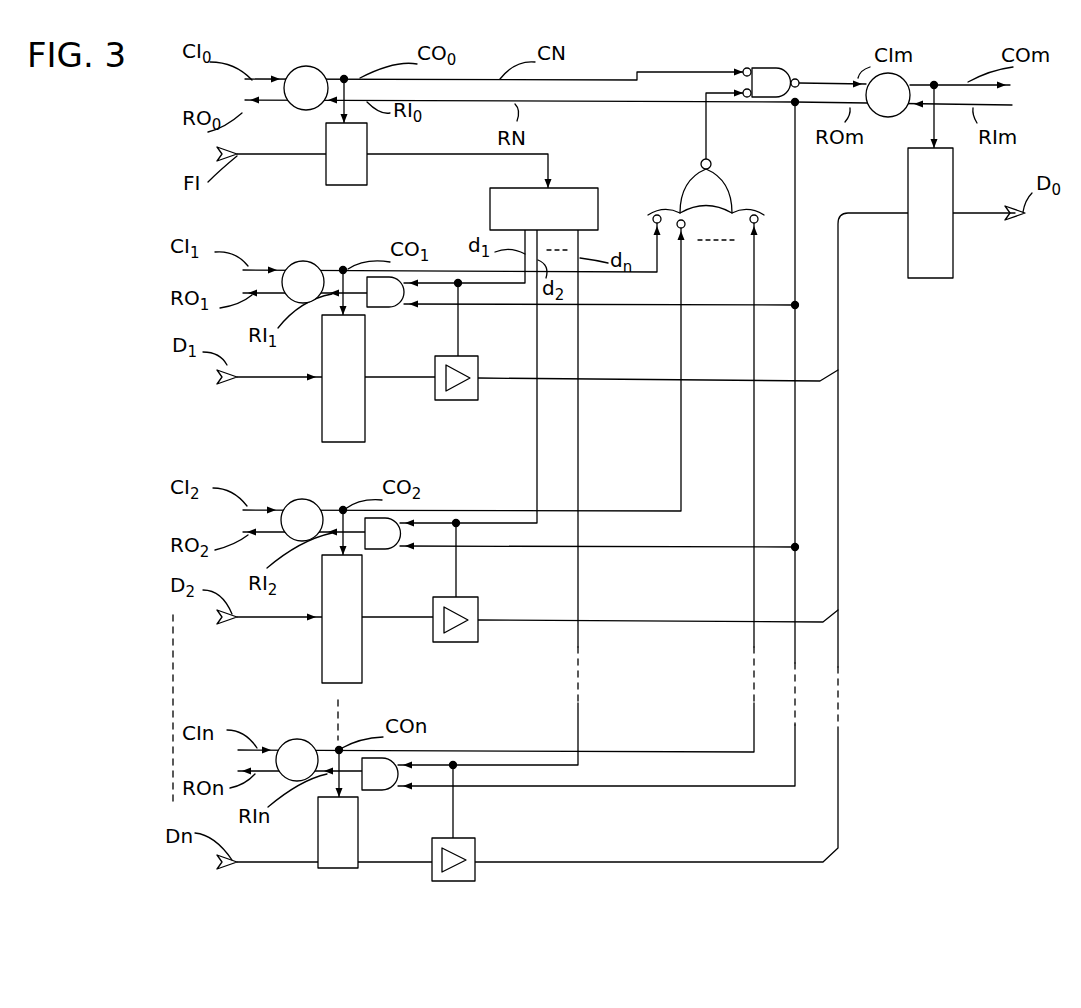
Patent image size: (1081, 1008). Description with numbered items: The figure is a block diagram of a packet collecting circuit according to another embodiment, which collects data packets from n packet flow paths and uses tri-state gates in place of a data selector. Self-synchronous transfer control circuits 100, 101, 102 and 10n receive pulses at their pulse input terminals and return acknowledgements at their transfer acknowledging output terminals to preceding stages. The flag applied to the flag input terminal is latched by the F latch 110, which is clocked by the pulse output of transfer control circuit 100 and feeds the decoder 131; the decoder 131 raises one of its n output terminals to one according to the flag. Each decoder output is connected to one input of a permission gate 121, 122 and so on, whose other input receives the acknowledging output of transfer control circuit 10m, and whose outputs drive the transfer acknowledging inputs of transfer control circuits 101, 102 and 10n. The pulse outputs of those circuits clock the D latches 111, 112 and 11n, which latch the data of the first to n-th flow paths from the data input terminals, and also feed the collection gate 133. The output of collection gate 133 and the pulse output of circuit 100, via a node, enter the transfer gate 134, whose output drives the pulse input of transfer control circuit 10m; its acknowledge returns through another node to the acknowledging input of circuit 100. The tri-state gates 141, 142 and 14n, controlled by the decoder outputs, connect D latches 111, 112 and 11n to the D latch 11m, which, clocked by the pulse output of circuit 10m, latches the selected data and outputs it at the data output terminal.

The self-synchronous type transfer control circuit 100 is at (329, 68).
The F latch (data hold circuit) 110 is at (367, 135).
The decoder 131 is at (600, 200).
The collection gate 133 is at (727, 187).
The transfer gate 134 is at (786, 70).
The self-synchronous type transfer control circuit 10m is at (912, 80).
The D latch (data hold circuit) 11m is at (932, 280).
The self-synchronous type transfer control circuit 101 is at (320, 263).
The permission gate 121 is at (390, 308).
The D latch (data hold circuit) 111 is at (366, 436).
The 3-state gate 141 is at (477, 357).
The self-synchronous type transfer control circuit 102 is at (298, 499).
The permission gate 122 is at (385, 550).
The D latch (data hold circuit) 112 is at (362, 666).
The 3-state gate 142 is at (480, 605).
The self-synchronous type transfer control circuit 10n is at (289, 742).
The D latch (data hold circuit) 11n is at (360, 843).
The 3-state gate 14n is at (477, 850).